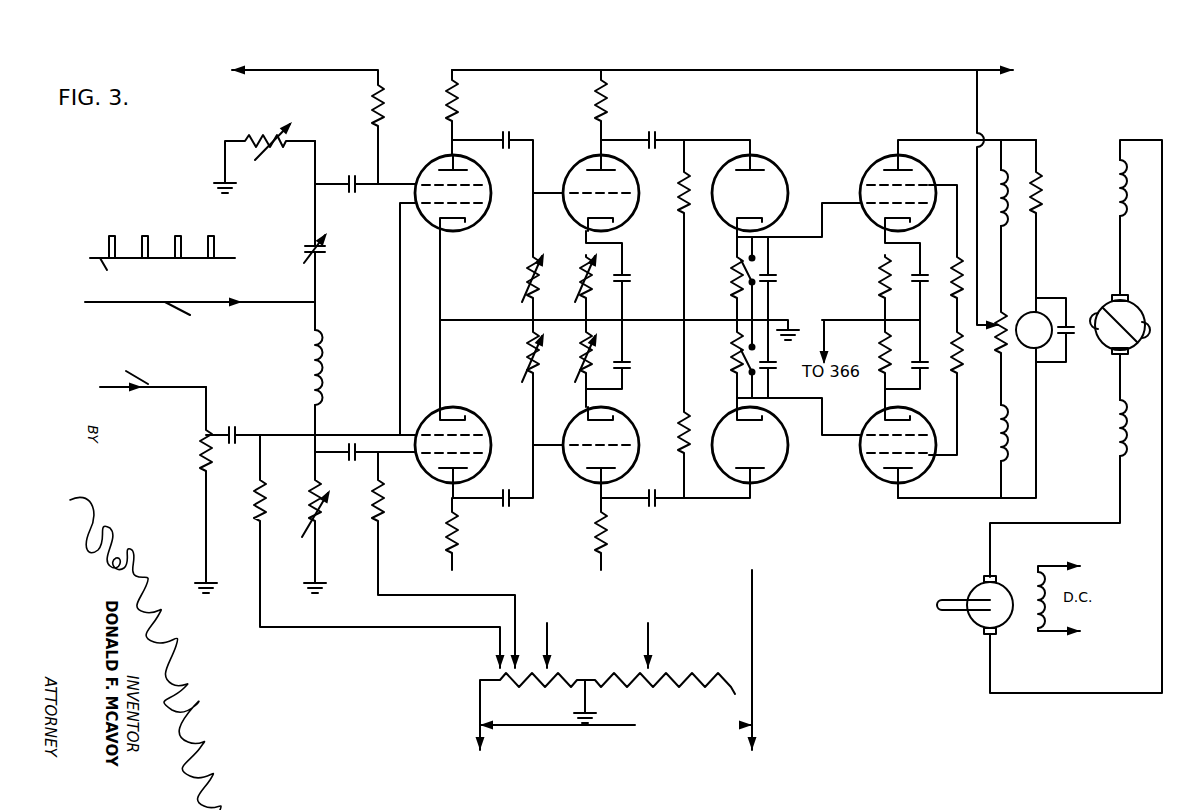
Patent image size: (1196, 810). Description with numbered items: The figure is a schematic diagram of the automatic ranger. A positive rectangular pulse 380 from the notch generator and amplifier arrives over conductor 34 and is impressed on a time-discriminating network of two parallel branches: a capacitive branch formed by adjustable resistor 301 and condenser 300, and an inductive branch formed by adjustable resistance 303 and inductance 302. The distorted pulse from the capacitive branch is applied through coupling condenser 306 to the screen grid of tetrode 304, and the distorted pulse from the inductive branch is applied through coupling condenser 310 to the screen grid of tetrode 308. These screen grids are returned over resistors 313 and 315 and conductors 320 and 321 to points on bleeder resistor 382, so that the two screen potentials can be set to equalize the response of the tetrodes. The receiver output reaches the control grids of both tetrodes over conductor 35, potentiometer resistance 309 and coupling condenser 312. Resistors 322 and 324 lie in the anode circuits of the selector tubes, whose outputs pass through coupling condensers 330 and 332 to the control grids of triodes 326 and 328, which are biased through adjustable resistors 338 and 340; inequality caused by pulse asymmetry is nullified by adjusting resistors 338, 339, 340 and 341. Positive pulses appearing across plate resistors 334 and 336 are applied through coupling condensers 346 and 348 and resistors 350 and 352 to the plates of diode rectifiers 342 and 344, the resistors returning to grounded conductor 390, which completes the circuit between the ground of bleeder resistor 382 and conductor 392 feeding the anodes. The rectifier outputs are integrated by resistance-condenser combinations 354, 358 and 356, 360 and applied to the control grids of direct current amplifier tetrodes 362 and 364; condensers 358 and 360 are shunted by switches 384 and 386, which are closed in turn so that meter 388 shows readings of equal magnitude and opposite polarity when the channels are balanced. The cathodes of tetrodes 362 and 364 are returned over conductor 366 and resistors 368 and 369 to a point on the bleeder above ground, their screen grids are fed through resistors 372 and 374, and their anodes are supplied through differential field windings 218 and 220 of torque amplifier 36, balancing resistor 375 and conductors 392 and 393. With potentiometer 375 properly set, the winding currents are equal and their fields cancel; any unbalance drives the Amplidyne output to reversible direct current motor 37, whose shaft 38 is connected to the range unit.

The conductor 34 is at (183, 303).
The conductor 35 is at (190, 386).
The torque amplifier 36 is at (1134, 305).
The reversible direct current motor 37 is at (968, 594).
The shaft 38 is at (952, 613).
The differential field winding 218 is at (1004, 172).
The differential field winding 220 is at (1008, 430).
The condenser 300 is at (312, 247).
The adjustable resistor 301 is at (258, 141).
The inductance 302 is at (322, 362).
The adjustable resistance 303 is at (320, 512).
The tetrode 304 is at (470, 236).
The coupling condenser 306 is at (365, 174).
The tetrode 308 is at (470, 418).
The potentiometer resistance 309 is at (200, 453).
The coupling condenser 310 is at (365, 445).
The coupling condenser 312 is at (237, 432).
The resistor 313 is at (373, 112).
The resistor 315 is at (397, 496).
The conductor 320 is at (549, 645).
The conductor 321 is at (386, 597).
The resistor 322 is at (462, 108).
The resistor 324 is at (458, 545).
The triode 326 is at (598, 230).
The triode 328 is at (591, 480).
The coupling condenser 330 is at (508, 132).
The coupling condenser 332 is at (508, 506).
The plate resistor 334 is at (612, 108).
The plate resistor 336 is at (607, 546).
The adjustable resistor 338 is at (584, 272).
The adjustable resistor 339 is at (526, 279).
The adjustable resistor 340 is at (583, 362).
The adjustable resistor 341 is at (526, 345).
The diode rectifier 342 is at (756, 158).
The diode rectifier 344 is at (768, 480).
The coupling condenser 346 is at (658, 132).
The coupling condenser 348 is at (660, 506).
The resistor 350 is at (686, 188).
The resistor 352 is at (680, 430).
The resistance 354 is at (732, 273).
The resistance 356 is at (732, 365).
The condenser 358 is at (771, 280).
The condenser 360 is at (769, 375).
The tetrode 362 is at (886, 160).
The tetrode 364 is at (875, 478).
The conductor 366 is at (650, 645).
The resistor 368 is at (879, 292).
The resistor 369 is at (879, 356).
The resistor 372 is at (954, 267).
The resistor 374 is at (956, 369).
The balancing resistor 375 is at (998, 343).
The positive rectangular pulse 380 is at (148, 237).
The bleeder resistor 382 is at (660, 690).
The switch 384 is at (756, 264).
The switch 386 is at (733, 345).
The meter 388 is at (1043, 312).
The grounded conductor 390 is at (632, 321).
The conductor 392 is at (756, 658).
The conductor 393 is at (975, 109).